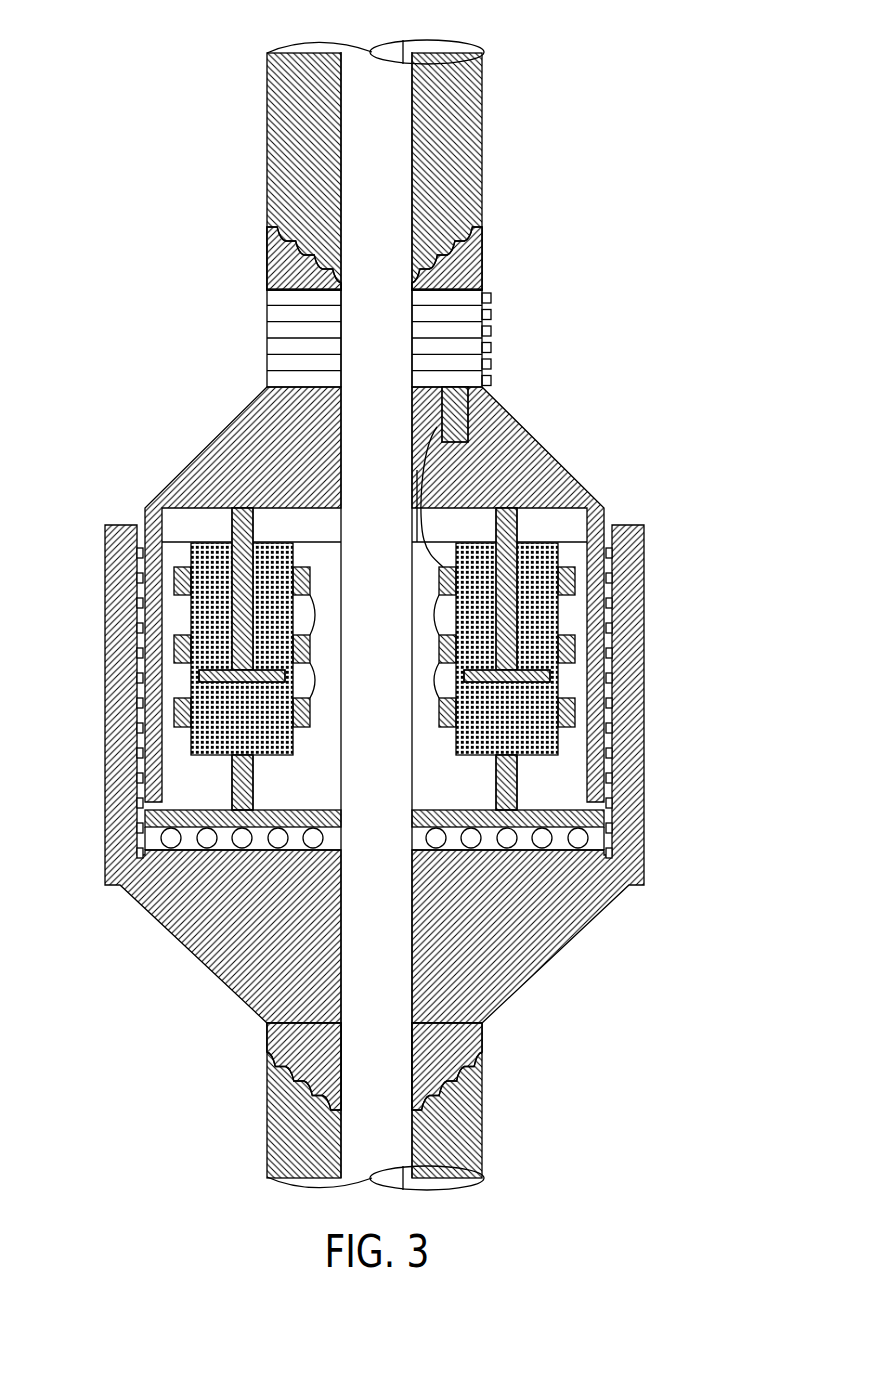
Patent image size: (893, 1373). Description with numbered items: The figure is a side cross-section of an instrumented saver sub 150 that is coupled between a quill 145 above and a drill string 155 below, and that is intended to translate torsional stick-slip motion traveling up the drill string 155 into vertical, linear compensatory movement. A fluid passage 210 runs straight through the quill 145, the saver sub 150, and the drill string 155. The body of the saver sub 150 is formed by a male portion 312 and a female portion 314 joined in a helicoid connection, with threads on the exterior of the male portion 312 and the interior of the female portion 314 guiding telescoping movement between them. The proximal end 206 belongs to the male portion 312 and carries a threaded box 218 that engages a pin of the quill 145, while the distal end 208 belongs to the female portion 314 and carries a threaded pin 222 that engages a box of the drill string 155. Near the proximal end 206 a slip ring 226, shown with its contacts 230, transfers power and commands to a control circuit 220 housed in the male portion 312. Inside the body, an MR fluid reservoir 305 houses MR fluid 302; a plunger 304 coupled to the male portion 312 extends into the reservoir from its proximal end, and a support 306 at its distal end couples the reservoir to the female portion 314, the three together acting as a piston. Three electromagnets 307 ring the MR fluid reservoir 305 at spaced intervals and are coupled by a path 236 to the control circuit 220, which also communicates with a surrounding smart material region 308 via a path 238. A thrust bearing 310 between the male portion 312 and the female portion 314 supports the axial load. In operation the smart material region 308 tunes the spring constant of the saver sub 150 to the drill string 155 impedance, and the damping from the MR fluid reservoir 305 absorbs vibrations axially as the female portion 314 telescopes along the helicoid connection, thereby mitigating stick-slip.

The saver sub 150 is at (398, 597).
The quill 145 is at (273, 117).
The drill string 155 is at (286, 1156).
The proximal end 206 is at (347, 427).
The distal end 208 is at (395, 822).
The fluid passage 210 is at (358, 62).
The box 218 is at (273, 262).
The control circuit 220 is at (465, 408).
The pin 222 is at (467, 1042).
The slip ring 226 is at (267, 290).
The tabs 230 is at (491, 315).
The path 236 is at (435, 487).
The path 238 is at (417, 470).
The MR fluid 302 is at (535, 633).
The plunger 304 is at (518, 530).
The MR fluid reservoir 305 is at (548, 682).
The support 306 is at (518, 787).
The electromagnet 307 is at (575, 577).
The smart material region 308 is at (180, 793).
The thrust bearing 310 is at (152, 852).
The male portion 312 is at (190, 462).
The female portion 314 is at (227, 990).